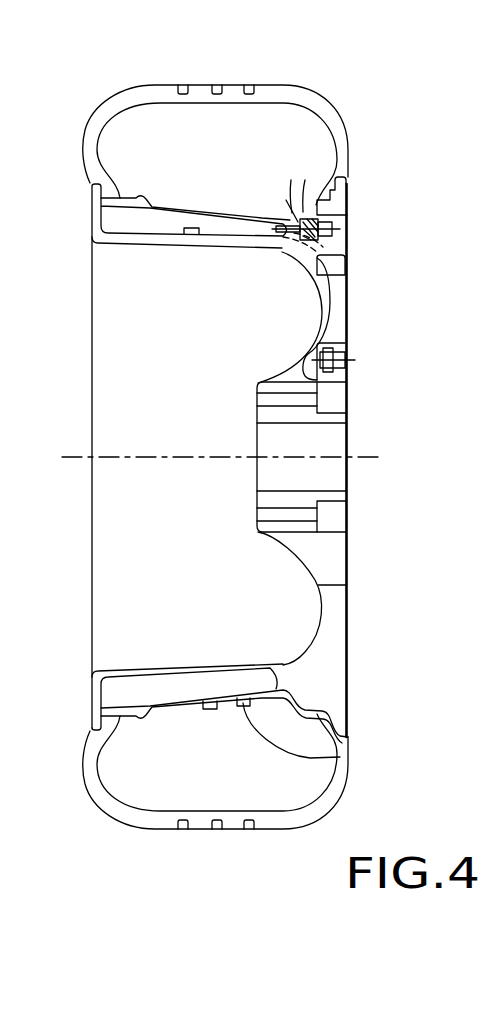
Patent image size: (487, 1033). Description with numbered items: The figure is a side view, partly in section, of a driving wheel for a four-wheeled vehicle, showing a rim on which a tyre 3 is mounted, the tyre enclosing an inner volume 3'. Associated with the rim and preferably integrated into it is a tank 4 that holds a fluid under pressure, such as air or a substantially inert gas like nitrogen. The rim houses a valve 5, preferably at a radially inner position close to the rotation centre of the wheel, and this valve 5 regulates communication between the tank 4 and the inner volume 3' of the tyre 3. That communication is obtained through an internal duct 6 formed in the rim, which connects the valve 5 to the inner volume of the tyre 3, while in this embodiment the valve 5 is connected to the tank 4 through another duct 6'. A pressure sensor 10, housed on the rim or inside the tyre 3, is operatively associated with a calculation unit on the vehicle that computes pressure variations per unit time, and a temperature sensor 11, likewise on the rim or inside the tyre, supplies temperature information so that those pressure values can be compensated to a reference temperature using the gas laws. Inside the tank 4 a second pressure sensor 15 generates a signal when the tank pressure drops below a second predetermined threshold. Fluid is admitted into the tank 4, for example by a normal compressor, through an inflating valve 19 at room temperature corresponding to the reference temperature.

The tyre 3 is at (261, 447).
The inner volume 3' is at (195, 439).
The tank 4 is at (142, 222).
The valve 5 is at (349, 215).
The internal duct 6 is at (344, 187).
The duct 6' is at (366, 261).
The pressure sensor 10 is at (340, 757).
The temperature sensor 11 is at (207, 710).
The second pressure sensor 15 is at (191, 244).
The inflating valve 19 is at (350, 360).